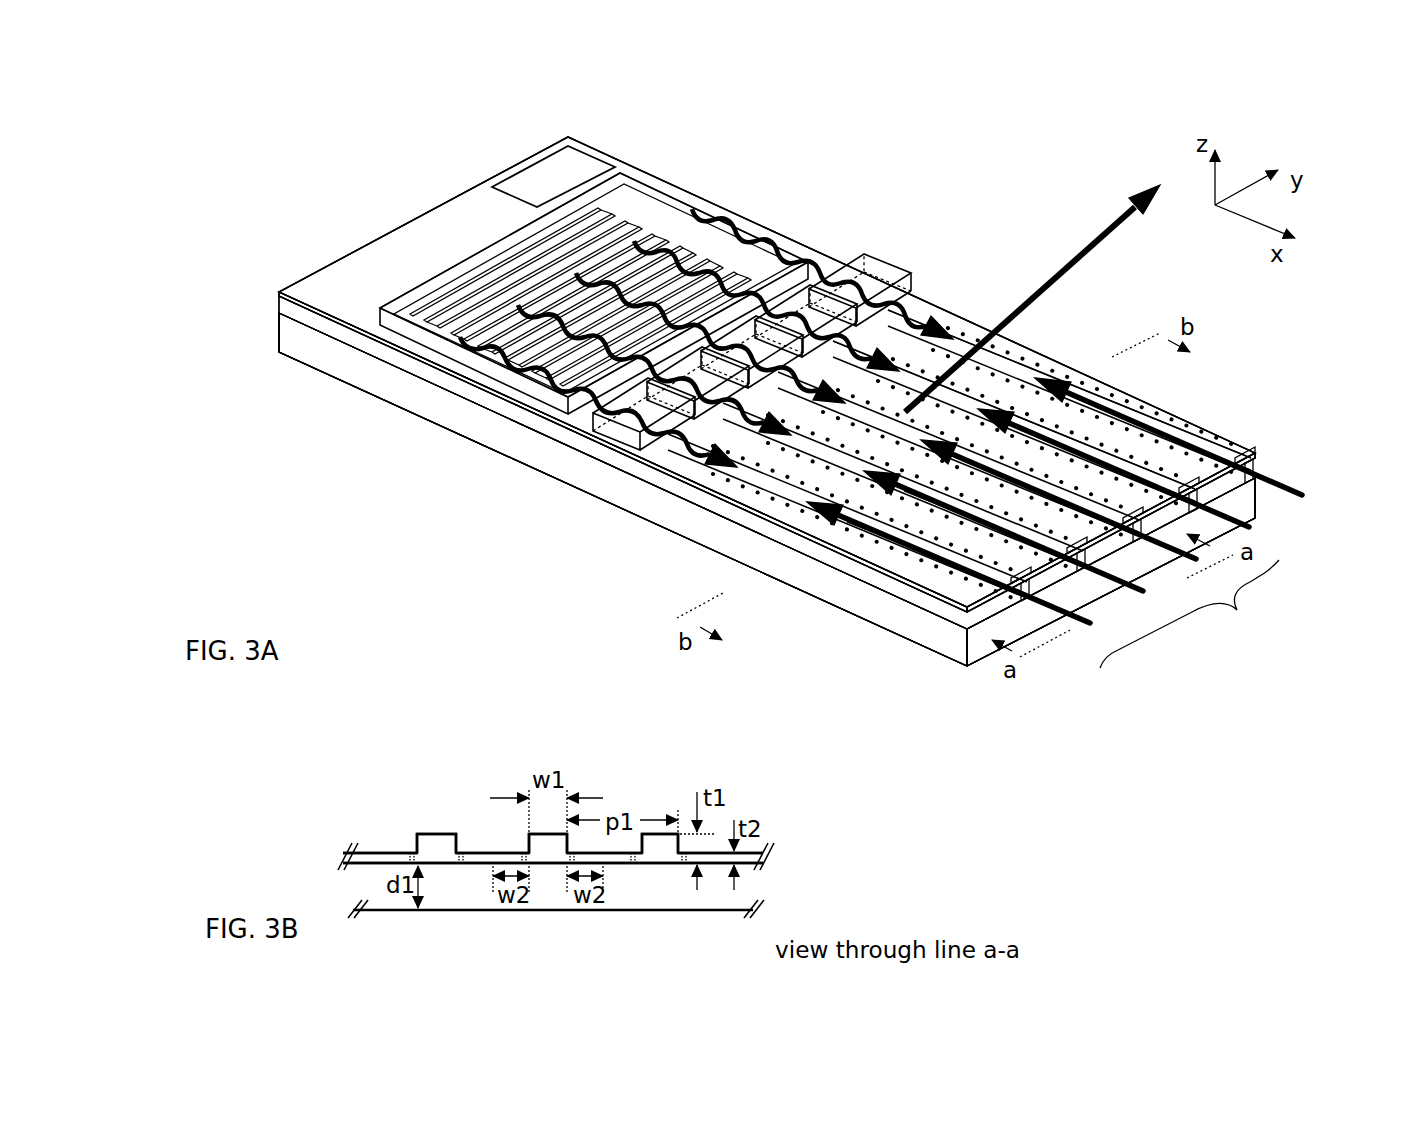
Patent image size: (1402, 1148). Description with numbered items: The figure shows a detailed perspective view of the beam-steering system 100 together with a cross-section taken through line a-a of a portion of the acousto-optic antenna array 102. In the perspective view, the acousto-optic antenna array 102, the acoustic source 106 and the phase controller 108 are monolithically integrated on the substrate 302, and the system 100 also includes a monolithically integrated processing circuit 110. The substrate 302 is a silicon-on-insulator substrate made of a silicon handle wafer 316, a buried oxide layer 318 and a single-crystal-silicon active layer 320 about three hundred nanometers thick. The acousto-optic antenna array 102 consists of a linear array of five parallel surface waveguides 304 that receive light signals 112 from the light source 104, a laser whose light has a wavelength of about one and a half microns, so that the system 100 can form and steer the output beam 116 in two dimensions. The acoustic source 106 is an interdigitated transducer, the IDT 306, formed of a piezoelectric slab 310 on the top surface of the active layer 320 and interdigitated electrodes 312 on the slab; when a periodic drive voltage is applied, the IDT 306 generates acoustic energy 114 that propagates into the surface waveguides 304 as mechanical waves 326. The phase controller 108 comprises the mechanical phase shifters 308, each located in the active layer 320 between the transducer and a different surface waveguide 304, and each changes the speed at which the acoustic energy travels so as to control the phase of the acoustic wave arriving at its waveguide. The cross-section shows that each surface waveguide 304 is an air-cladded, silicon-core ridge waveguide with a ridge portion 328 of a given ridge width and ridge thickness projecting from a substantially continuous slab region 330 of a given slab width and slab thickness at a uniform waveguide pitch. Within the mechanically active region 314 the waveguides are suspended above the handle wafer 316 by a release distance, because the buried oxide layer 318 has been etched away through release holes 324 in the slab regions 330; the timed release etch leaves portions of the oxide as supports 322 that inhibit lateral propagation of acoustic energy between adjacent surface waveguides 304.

In FIG. 3A, the system 100 is at (262, 92).
In FIG. 3A, the acousto-optic antenna array 102 is at (1043, 340).
In FIG. 3B, the acousto-optic antenna array 102 is at (296, 800).
In FIG. 3A, the light source 104 is at (1222, 627).
In FIG. 3A, the acoustic source 106 is at (679, 160).
In FIG. 3A, the phase controller 108 is at (880, 265).
In FIG. 3A, the processing circuit 110 is at (555, 182).
In FIG. 3A, the light signals 112 is at (1307, 478).
In FIG. 3A, the acoustic energy 114 is at (845, 250).
In FIG. 3A, the output beam 116 is at (1037, 292).
In FIG. 3A, the substrate 302 is at (262, 292).
In FIG. 3A, the surface waveguides 304 is at (817, 454).
In FIG. 3A, the IDT 306 is at (746, 205).
In FIG. 3A, the mechanical phase shifters 308 is at (593, 420).
In FIG. 3A, the piezoelectric slab 310 is at (385, 305).
In FIG. 3A, the interdigitated electrodes 312 is at (467, 280).
In FIG. 3A, the mechanically active region 314 is at (1210, 380).
In FIG. 3A, the handle wafer 316 is at (408, 393).
In FIG. 3A, the buried oxide layer 318 is at (372, 347).
In FIG. 3A, the active layer 320 is at (305, 290).
In FIG. 3B, the active layer 320 is at (798, 822).
In FIG. 3A, the supports 322 is at (983, 596).
In FIG. 3A, the release holes 324 is at (683, 462).
In FIG. 3B, the release holes 324 is at (410, 852).
In FIG. 3A, the mechanical waves 326 is at (800, 265).
In FIG. 3A, the ridge portion 328 is at (1049, 496).
In FIG. 3B, the ridge portion 328 is at (443, 830).
In FIG. 3B, the slab region 330 is at (383, 837).